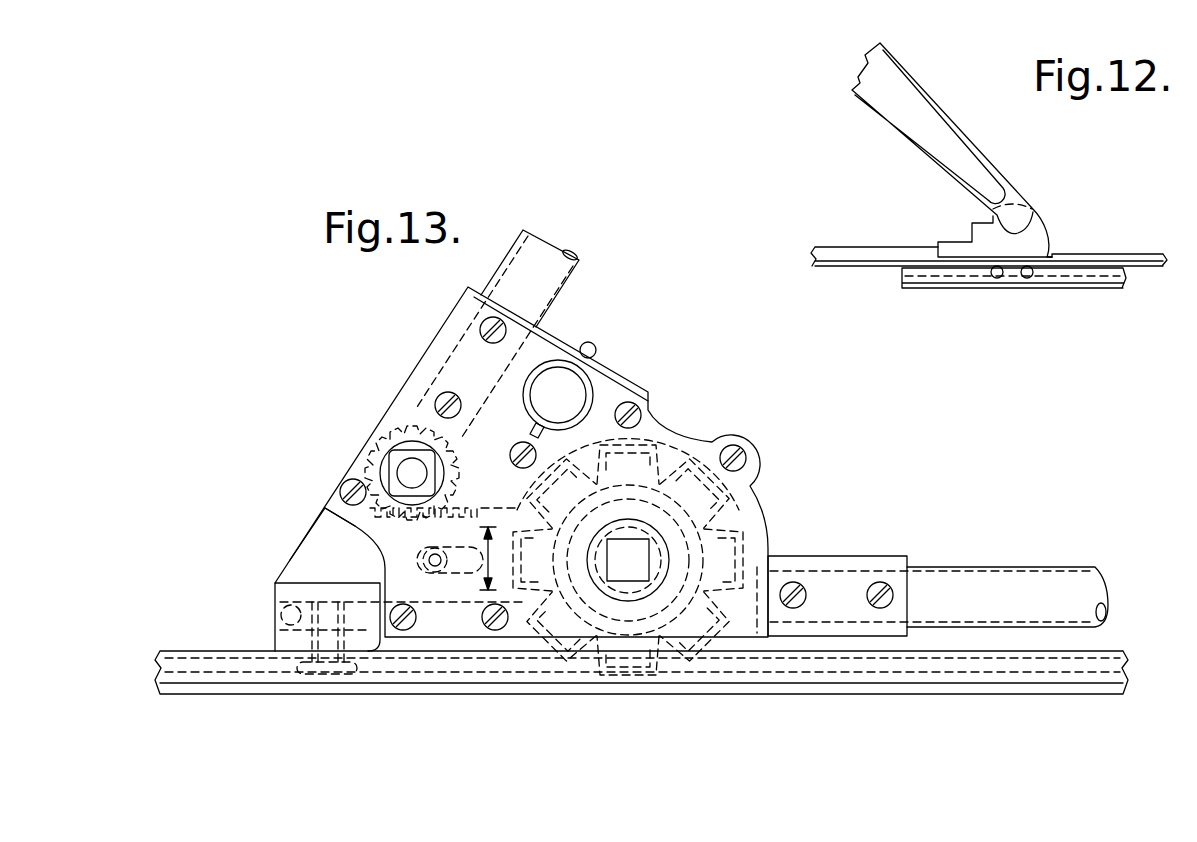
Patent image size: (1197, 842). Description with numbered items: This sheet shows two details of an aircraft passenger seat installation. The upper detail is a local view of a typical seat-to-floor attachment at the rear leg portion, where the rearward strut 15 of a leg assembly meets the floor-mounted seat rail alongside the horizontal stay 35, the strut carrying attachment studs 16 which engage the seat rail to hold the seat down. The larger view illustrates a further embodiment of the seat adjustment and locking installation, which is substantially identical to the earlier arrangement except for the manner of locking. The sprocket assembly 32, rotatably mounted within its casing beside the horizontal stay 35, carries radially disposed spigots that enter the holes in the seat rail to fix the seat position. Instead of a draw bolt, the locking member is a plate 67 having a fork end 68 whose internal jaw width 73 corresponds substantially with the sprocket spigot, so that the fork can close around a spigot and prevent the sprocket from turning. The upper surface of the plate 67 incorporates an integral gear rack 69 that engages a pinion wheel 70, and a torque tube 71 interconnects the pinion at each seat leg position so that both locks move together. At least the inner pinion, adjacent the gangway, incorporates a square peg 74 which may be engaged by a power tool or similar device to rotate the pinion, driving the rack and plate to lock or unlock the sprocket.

In FIG. 12, the rearward strut 15 is at (940, 108).
In FIG. 12, the attachment studs 16 is at (996, 285).
In FIG. 13, the sprocket assembly 32 is at (748, 507).
In FIG. 13, the horizontal stay 35 is at (1015, 568).
In FIG. 12, the horizontal stay 35 is at (862, 248).
In FIG. 13, the plate 67 is at (433, 602).
In FIG. 13, the fork end 68 is at (493, 595).
In FIG. 13, the gear rack 69 is at (333, 508).
In FIG. 13, the pinion wheel 70 is at (400, 424).
In FIG. 13, the torque tube 71 is at (392, 437).
In FIG. 13, the internal jaw width 73 is at (489, 524).
In FIG. 13, the square peg 74 is at (404, 500).